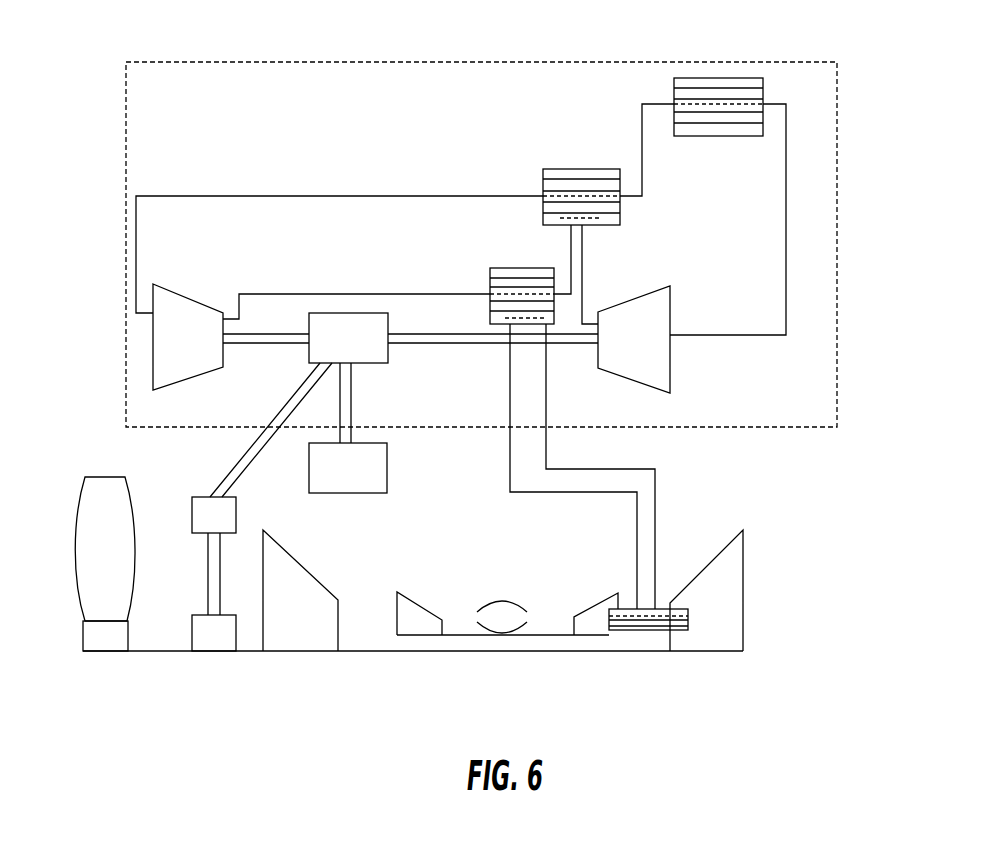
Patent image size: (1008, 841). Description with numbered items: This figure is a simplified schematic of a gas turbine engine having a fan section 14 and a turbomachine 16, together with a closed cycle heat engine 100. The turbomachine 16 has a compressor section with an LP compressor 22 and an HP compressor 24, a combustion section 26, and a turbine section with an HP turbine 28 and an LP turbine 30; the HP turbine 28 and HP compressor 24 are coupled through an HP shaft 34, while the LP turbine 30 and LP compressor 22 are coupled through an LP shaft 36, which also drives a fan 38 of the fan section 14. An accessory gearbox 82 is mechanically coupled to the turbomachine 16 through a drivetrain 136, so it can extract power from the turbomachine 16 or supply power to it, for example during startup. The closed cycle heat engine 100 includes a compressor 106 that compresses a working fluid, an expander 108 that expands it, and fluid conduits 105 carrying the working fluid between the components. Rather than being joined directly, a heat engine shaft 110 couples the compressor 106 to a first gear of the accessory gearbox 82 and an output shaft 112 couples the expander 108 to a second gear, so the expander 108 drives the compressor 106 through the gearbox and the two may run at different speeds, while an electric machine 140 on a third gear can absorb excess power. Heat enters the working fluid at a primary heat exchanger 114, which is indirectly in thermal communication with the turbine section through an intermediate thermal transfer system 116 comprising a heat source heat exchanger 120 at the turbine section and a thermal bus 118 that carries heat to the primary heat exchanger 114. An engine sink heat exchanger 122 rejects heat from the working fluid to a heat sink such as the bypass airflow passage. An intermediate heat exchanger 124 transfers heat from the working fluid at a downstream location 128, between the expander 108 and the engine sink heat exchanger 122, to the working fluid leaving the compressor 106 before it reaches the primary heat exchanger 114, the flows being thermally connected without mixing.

The fan section 14 is at (78, 455).
The turbomachine 16 is at (388, 560).
The LP compressor 22 is at (317, 622).
The HP compressor 24 is at (417, 618).
The combustion section 26 is at (508, 597).
The HP turbine 28 is at (592, 628).
The LP turbine 30 is at (725, 592).
The HP shaft 34 is at (463, 636).
The LP shaft 36 is at (517, 652).
The fan 38 is at (72, 535).
The accessory gearbox 82 is at (362, 357).
The closed cycle heat engine 100 is at (812, 80).
The fluid conduits 105 is at (395, 196).
The compressor 106 is at (654, 351).
The expander 108 is at (188, 337).
The heat engine shaft 110 is at (568, 345).
The output shaft 112 is at (238, 345).
The primary heat exchanger 114 is at (525, 268).
The intermediate thermal transfer system 116 is at (690, 498).
The thermal bus 118 is at (527, 492).
The heat source heat exchanger 120 is at (650, 632).
The engine sink heat exchanger 122 is at (748, 78).
The intermediate heat exchanger 124 is at (578, 169).
The downstream location 128 is at (535, 190).
The drivetrain 136 is at (197, 487).
The electric machine 140 is at (368, 482).